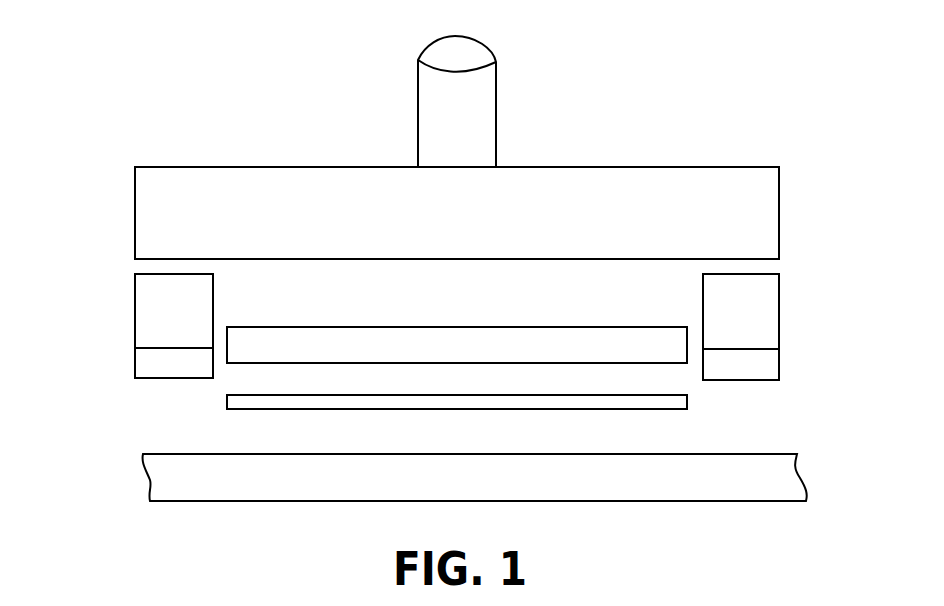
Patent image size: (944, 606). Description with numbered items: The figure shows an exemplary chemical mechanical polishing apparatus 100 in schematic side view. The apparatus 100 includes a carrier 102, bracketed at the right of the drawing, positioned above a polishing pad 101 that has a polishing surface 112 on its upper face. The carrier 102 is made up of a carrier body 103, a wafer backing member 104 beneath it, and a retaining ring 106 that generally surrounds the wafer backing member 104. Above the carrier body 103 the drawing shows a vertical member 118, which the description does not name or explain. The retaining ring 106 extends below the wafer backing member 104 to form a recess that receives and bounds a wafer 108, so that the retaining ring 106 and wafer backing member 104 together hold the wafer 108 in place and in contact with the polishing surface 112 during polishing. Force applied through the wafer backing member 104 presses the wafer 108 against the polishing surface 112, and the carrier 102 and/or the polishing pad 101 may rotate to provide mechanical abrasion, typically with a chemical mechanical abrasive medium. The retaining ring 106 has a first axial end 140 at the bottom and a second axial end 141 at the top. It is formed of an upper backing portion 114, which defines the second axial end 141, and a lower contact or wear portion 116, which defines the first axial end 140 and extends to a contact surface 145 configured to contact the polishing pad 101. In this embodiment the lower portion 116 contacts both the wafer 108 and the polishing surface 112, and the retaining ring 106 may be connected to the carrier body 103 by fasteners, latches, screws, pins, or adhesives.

The chemical mechanical polishing apparatus 100 is at (220, 56).
The polishing pad 101 is at (482, 488).
The carrier 102 is at (822, 168).
The carrier body 103 is at (482, 224).
The wafer backing member 104 is at (482, 356).
The retaining ring 106 is at (761, 325).
The wafer 108 is at (688, 402).
The polishing surface 112 is at (527, 446).
The upper backing portion 114 is at (194, 325).
The lower contact or wear portion 116 is at (194, 374).
The gas inlet conduit 118 is at (482, 133).
The first axial end 140 is at (132, 392).
The second axial end 141 is at (126, 266).
The contact surface 145 is at (170, 379).